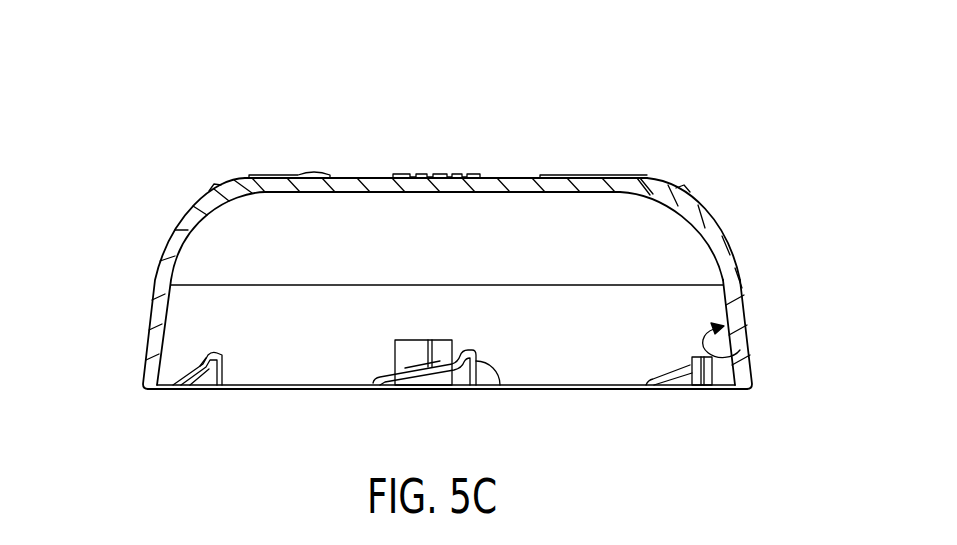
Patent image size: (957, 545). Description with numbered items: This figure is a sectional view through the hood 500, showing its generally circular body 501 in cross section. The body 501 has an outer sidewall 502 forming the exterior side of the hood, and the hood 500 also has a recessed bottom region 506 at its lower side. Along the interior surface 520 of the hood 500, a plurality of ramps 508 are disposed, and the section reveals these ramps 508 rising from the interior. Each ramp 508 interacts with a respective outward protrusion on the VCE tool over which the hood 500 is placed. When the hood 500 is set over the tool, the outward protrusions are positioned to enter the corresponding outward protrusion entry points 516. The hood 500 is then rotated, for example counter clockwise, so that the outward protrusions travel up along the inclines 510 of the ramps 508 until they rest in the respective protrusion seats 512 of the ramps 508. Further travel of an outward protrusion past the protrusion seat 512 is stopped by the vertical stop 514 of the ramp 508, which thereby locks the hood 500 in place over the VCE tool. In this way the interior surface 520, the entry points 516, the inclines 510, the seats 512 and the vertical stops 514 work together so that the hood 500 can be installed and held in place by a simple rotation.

The hood 500 is at (696, 131).
The generally circular body 501 is at (720, 227).
The outer sidewall 502 is at (747, 299).
The recessed bottom region 506 is at (271, 397).
The ramp 508 is at (208, 377).
The incline 510 is at (185, 375).
The protrusion seat 512 is at (455, 382).
The vertical stop 514 is at (502, 382).
The outward protrusion entry point 516 is at (728, 378).
The interior surface 520 is at (750, 350).